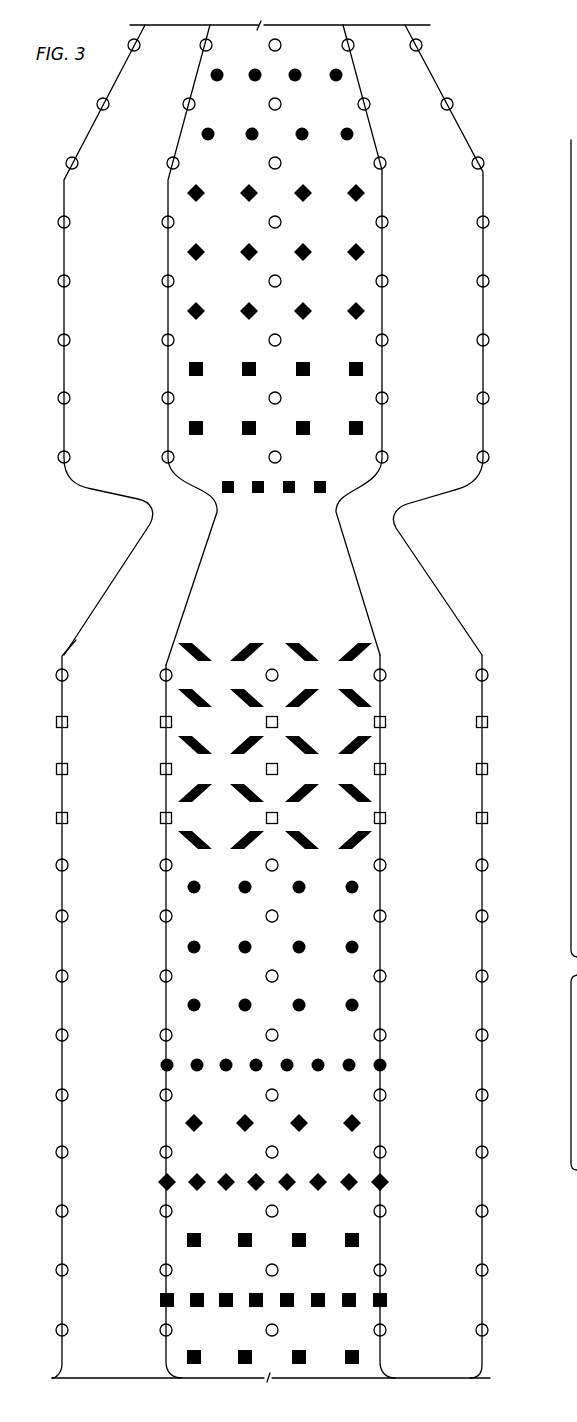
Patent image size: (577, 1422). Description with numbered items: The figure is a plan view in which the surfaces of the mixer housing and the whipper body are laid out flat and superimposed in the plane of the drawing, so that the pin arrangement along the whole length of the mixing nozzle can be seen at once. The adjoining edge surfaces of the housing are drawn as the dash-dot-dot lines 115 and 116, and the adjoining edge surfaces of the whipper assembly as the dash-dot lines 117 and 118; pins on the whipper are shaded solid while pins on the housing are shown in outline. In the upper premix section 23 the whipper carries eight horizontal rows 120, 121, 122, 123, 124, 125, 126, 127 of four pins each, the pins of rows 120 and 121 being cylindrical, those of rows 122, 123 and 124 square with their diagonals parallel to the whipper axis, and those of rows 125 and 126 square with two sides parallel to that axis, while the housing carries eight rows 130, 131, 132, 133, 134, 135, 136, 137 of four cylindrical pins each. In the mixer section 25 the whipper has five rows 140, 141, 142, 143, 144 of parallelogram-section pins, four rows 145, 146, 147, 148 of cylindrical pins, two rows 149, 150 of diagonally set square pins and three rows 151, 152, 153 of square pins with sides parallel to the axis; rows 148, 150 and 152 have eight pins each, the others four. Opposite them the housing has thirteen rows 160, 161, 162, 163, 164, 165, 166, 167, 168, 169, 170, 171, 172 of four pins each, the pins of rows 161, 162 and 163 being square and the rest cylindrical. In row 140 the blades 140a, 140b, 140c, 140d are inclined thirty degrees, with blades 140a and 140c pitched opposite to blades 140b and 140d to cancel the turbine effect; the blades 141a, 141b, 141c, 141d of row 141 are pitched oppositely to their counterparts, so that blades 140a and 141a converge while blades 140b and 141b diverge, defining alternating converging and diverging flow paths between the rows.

The premix section 23 is at (56, 323).
The mixer section 25 is at (52, 985).
The dash-dot-dot line 115 is at (64, 205).
The dash-dot-dot line 116 is at (408, 30).
The dash-dot line 117 is at (200, 82).
The dash-dot line 118 is at (356, 70).
The horizontal row of pins 120 is at (362, 75).
The horizontal row of pins 121 is at (378, 134).
The horizontal row of pins 122 is at (388, 193).
The horizontal row of pins 123 is at (388, 252).
The horizontal row of pins 124 is at (388, 311).
The horizontal row of pins 125 is at (388, 369).
The horizontal row of pins 126 is at (388, 428).
The horizontal row of pins 127 is at (368, 487).
The horizontal row of pins 130 is at (423, 45).
The horizontal row of pins 131 is at (454, 104).
The horizontal row of pins 132 is at (485, 163).
The horizontal row of pins 133 is at (490, 222).
The horizontal row of pins 134 is at (490, 281).
The horizontal row of pins 135 is at (490, 340).
The horizontal row of pins 136 is at (490, 398).
The horizontal row of pins 137 is at (490, 457).
The horizontal row of pins 140 is at (388, 652).
The blade 140a is at (192, 643).
The blade 140b is at (245, 643).
The blade 140c is at (305, 643).
The blade 140d is at (355, 643).
The horizontal row of pins 141 is at (388, 698).
The blade 141a is at (196, 690).
The blade 141b is at (245, 705).
The blade 141c is at (304, 705).
The blade 141d is at (358, 700).
The horizontal row of pins 142 is at (388, 745).
The horizontal row of pins 143 is at (388, 793).
The horizontal row of pins 144 is at (388, 840).
The horizontal row of pins 145 is at (388, 887).
The horizontal row of pins 146 is at (388, 947).
The horizontal row of pins 147 is at (388, 1005).
The horizontal row of pins 148 is at (388, 1065).
The horizontal row of pins 149 is at (388, 1123).
The horizontal row of pins 150 is at (388, 1182).
The horizontal row of pins 151 is at (388, 1240).
The horizontal row of pins 152 is at (388, 1300).
The horizontal row of pins 153 is at (388, 1357).
The horizontal row of pins 160 is at (489, 675).
The horizontal row of pins 161 is at (489, 722).
The horizontal row of pins 162 is at (489, 769).
The horizontal row of pins 163 is at (489, 818).
The horizontal row of pins 164 is at (489, 865).
The horizontal row of pins 165 is at (489, 916).
The horizontal row of pins 166 is at (489, 976).
The horizontal row of pins 167 is at (489, 1035).
The horizontal row of pins 168 is at (489, 1095).
The horizontal row of pins 169 is at (489, 1152).
The horizontal row of pins 170 is at (489, 1211).
The horizontal row of pins 171 is at (489, 1270).
The horizontal row of pins 172 is at (489, 1330).